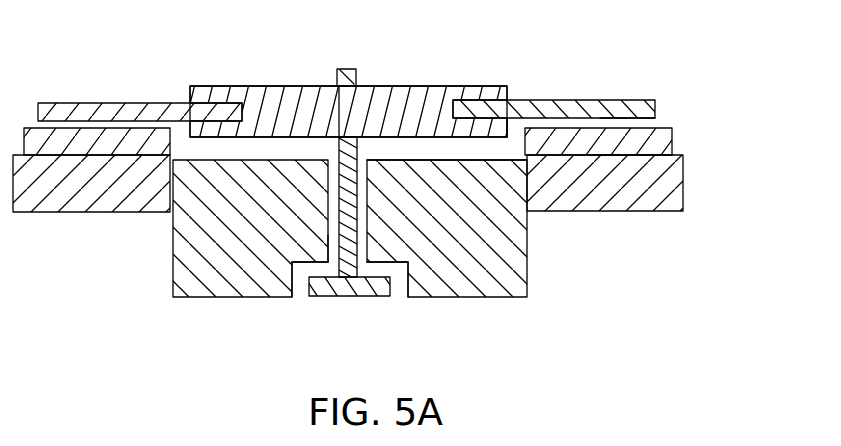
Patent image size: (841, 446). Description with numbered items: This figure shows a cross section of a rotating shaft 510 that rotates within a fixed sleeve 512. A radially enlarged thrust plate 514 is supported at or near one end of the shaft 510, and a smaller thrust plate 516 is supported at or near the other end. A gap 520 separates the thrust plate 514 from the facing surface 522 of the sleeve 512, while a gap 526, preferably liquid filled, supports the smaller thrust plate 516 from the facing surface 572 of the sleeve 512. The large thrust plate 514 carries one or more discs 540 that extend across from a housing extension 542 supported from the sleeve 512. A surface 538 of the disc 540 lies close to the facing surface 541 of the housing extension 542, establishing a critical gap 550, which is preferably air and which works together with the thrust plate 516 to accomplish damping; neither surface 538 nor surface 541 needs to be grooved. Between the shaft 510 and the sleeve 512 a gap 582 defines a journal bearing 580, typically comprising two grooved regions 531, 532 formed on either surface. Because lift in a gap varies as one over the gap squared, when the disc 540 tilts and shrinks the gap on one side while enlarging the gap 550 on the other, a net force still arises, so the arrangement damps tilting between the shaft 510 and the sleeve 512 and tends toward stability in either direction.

The rotating shaft 510 is at (347, 250).
The sleeve 512 is at (510, 270).
The radially enlarged thrust plate 514 is at (276, 97).
The smaller thrust plate 516 is at (320, 285).
The gap 520 is at (227, 148).
The facing surface of the sleeve 522 is at (416, 160).
The gap 526 is at (397, 278).
The grooved region 531 is at (368, 238).
The grooved region 532 is at (368, 183).
The surface of the disc 538 is at (515, 122).
The disc 540 is at (605, 110).
The facing surface of the housing extension 541 is at (593, 148).
The housing extension 542 is at (660, 145).
The gap 550 is at (642, 122).
The facing surface of the sleeve 572 is at (330, 249).
The journal bearing 580 is at (327, 212).
The gap 582 is at (330, 250).